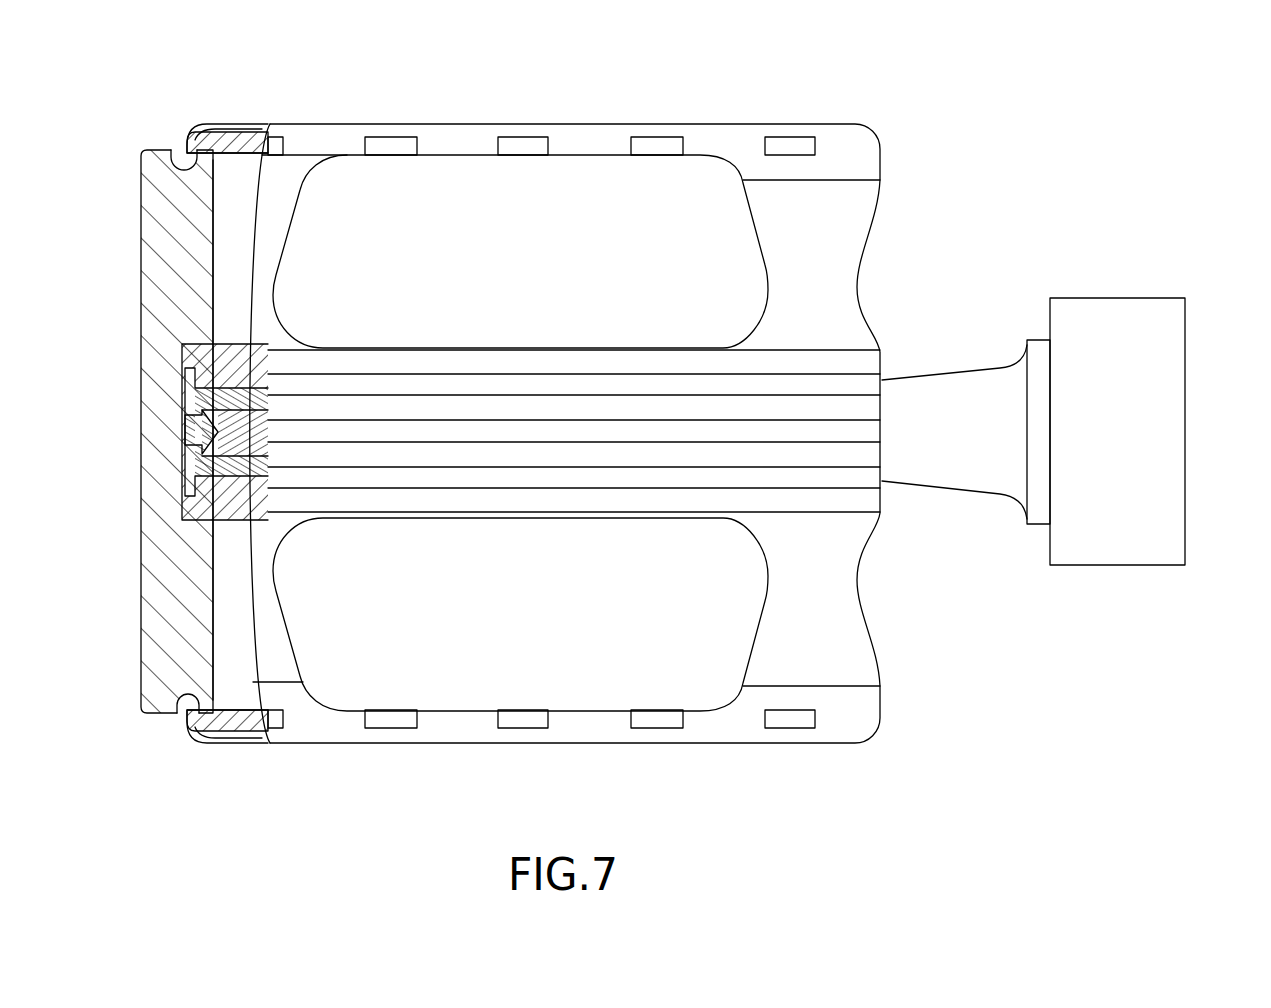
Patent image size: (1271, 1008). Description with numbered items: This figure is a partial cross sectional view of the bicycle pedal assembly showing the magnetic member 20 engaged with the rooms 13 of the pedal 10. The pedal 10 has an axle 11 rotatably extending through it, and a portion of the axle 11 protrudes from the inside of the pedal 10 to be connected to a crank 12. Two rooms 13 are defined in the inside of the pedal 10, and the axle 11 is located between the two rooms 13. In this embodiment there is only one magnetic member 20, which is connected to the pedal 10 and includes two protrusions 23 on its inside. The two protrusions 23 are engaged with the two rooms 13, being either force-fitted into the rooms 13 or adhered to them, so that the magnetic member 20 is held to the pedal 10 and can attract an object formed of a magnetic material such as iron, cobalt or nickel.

The pedal 10 is at (598, 127).
The axle 11 is at (958, 390).
The crank 12 is at (1178, 443).
The room 13 is at (174, 150).
The magnetic member 20 is at (160, 406).
The protrusion 23 is at (205, 245).